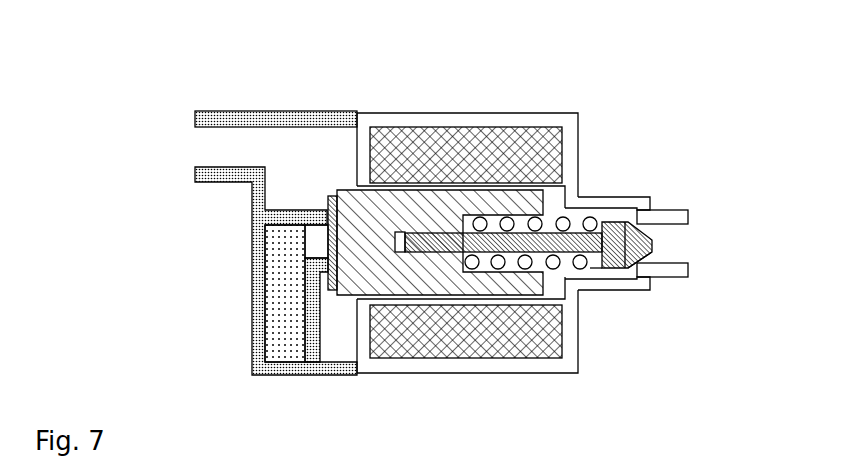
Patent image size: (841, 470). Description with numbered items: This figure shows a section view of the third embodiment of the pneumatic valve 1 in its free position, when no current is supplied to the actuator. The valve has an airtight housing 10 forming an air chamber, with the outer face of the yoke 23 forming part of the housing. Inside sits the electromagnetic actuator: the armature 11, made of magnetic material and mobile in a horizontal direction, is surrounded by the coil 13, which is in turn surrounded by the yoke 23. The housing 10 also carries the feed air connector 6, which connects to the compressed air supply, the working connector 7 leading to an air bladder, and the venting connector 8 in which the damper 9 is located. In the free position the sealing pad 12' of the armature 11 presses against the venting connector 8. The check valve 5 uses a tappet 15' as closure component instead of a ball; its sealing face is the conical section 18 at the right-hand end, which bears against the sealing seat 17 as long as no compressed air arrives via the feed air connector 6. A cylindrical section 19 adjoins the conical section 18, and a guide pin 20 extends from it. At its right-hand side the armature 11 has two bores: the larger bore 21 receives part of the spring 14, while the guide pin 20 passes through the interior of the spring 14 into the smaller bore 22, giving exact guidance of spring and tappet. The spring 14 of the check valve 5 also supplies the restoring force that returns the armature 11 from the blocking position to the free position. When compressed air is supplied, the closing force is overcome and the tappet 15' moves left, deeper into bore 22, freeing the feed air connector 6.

The pneumatic valve 1 is at (596, 66).
The check valve 5 is at (588, 282).
The feed air connector 6 is at (683, 245).
The working connector 7 is at (198, 148).
The venting connector 8 is at (313, 235).
The damper 9 is at (280, 358).
The housing 10 is at (268, 110).
The armature 11 is at (347, 280).
The sealing pad 12' is at (335, 214).
The coil 13 is at (500, 135).
The spring 14 is at (592, 222).
The tappet 15' is at (630, 324).
The sealing seat 17 is at (643, 213).
The conical section 18 is at (640, 266).
The cylindrical section 19 is at (617, 222).
The guide pin 20 is at (442, 240).
The bore 21 is at (513, 265).
The bore 22 is at (393, 245).
The yoke 23 is at (413, 120).